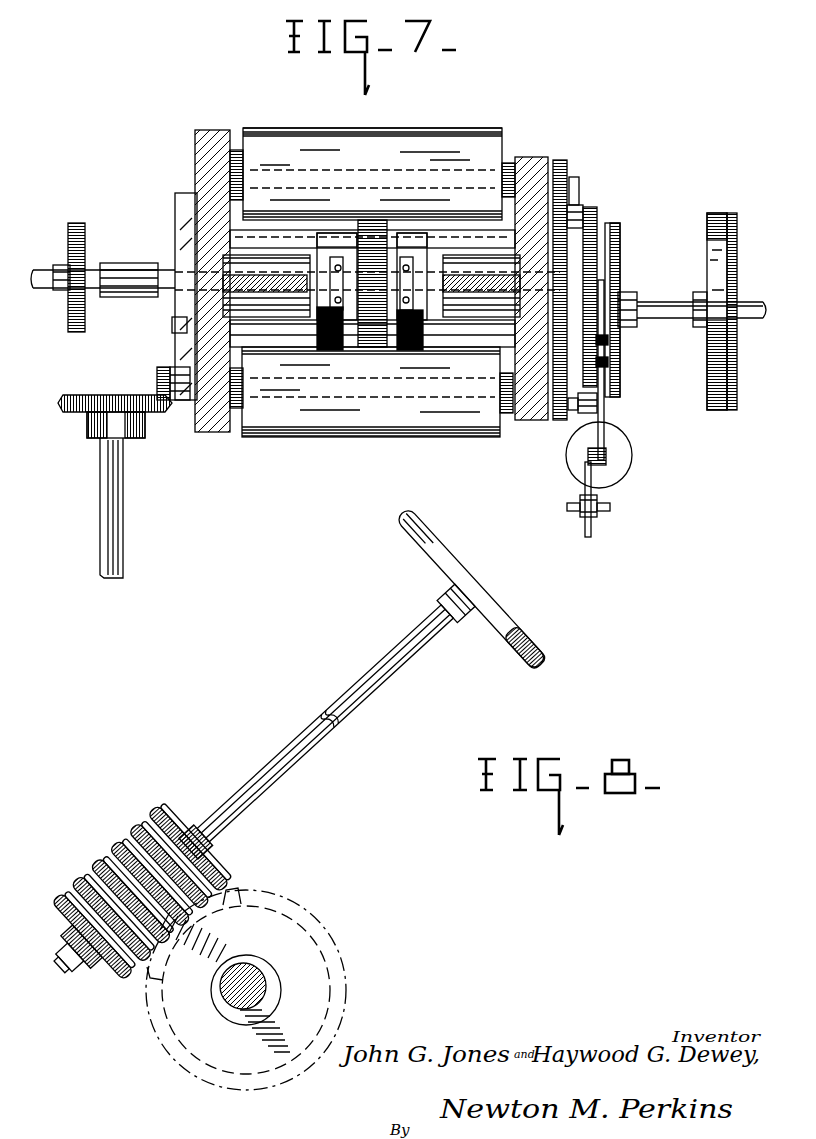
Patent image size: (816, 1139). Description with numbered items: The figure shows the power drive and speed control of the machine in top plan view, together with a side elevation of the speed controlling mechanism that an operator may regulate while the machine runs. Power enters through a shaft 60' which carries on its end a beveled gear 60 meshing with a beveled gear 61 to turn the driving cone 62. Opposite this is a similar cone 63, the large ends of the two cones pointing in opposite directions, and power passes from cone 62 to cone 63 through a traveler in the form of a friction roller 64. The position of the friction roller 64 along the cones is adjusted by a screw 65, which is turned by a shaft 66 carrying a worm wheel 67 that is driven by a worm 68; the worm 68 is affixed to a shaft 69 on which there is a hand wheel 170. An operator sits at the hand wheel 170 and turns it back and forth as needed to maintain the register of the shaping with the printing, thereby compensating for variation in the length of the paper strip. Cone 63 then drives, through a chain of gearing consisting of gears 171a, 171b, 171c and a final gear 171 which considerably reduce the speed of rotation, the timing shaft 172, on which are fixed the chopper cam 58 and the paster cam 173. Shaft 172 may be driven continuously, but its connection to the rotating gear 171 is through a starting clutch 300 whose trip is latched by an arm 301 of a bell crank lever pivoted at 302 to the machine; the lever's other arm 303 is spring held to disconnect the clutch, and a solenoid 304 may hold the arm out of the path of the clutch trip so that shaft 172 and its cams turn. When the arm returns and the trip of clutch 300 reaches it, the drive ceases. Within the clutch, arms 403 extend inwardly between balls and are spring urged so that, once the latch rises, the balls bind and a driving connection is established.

In FIG. 7, the chopper cam 58 is at (605, 397).
In FIG. 7, the beveled gear 60 is at (115, 403).
In FIG. 7, the shaft 60' is at (138, 508).
In FIG. 7, the beveled gear 61 is at (157, 379).
In FIG. 7, the driving cone 62 is at (262, 418).
In FIG. 7, the cone 63 is at (488, 136).
In FIG. 7, the friction roller 64 is at (363, 247).
In FIG. 7, the screw 65 is at (440, 285).
In FIG. 7, the shaft 66 is at (165, 270).
In FIG. 7, the worm wheel 67 is at (85, 235).
In FIG. 8, the worm wheel 67 is at (272, 915).
In FIG. 8, the worm 68 is at (150, 825).
In FIG. 8, the shaft 69 is at (385, 688).
In FIG. 8, the hand wheel 170 is at (478, 603).
In FIG. 7, the gear 171 is at (608, 232).
In FIG. 7, the gear 171a is at (560, 162).
In FIG. 7, the gear 171b is at (580, 205).
In FIG. 7, the gear 171c is at (590, 235).
In FIG. 7, the timing shaft 172 is at (657, 302).
In FIG. 7, the paster cam 173 is at (714, 213).
In FIG. 7, the starting clutch 300 is at (608, 338).
In FIG. 7, the arm 301 is at (608, 362).
In FIG. 7, the pivot 302 is at (572, 410).
In FIG. 7, the arm 303 is at (590, 447).
In FIG. 7, the solenoid 304 is at (624, 462).
In FIG. 7, the arms 403 is at (610, 506).